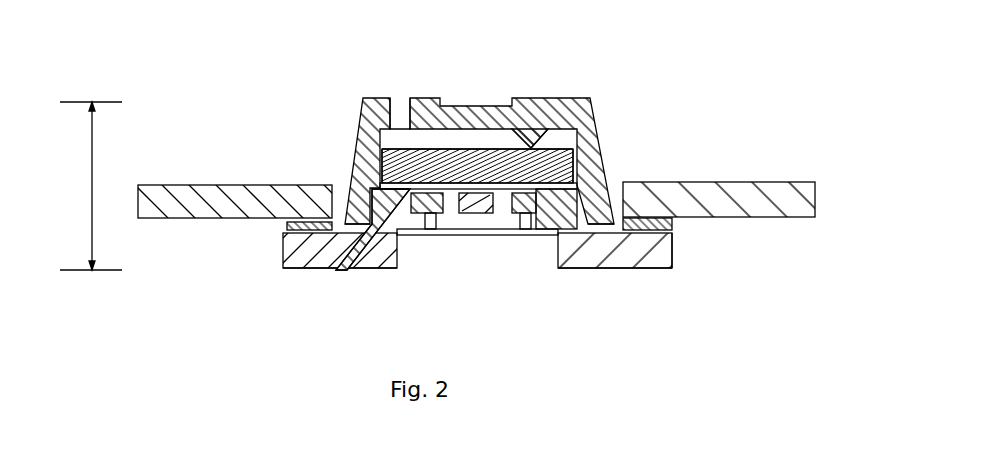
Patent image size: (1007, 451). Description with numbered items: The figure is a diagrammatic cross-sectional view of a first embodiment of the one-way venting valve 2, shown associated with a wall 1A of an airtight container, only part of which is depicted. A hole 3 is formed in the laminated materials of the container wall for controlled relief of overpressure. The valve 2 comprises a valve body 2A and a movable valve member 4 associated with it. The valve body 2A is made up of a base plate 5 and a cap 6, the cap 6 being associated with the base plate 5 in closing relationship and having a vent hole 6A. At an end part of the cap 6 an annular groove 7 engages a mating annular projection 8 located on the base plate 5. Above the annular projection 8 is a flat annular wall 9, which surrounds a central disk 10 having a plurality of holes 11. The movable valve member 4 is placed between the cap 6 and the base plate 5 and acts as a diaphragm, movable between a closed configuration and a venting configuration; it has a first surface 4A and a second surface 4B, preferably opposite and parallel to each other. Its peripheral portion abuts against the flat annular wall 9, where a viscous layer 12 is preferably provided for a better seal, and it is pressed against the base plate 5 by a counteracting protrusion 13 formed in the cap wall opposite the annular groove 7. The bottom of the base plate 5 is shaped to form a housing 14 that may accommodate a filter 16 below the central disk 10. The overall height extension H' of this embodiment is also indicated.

The wall 1A is at (210, 193).
The one-way venting valve 2 is at (738, 108).
The valve body 2A is at (682, 248).
The hole 3 is at (318, 170).
The movable valve member 4 is at (487, 160).
The first surface 4A is at (440, 190).
The second surface 4B is at (445, 148).
The base plate 5 is at (643, 270).
The cap 6 is at (600, 133).
The vent hole 6A is at (397, 95).
The annular groove 7 is at (372, 196).
The annular projection 8 is at (383, 212).
The flat annular wall 9 is at (581, 202).
The central disk 10 is at (408, 210).
The holes 11 is at (504, 216).
The viscous layer 12 is at (382, 145).
The counteracting protrusion 13 is at (531, 147).
The housing 14 is at (356, 322).
The filter 16 is at (533, 215).
The height extension H' is at (122, 188).